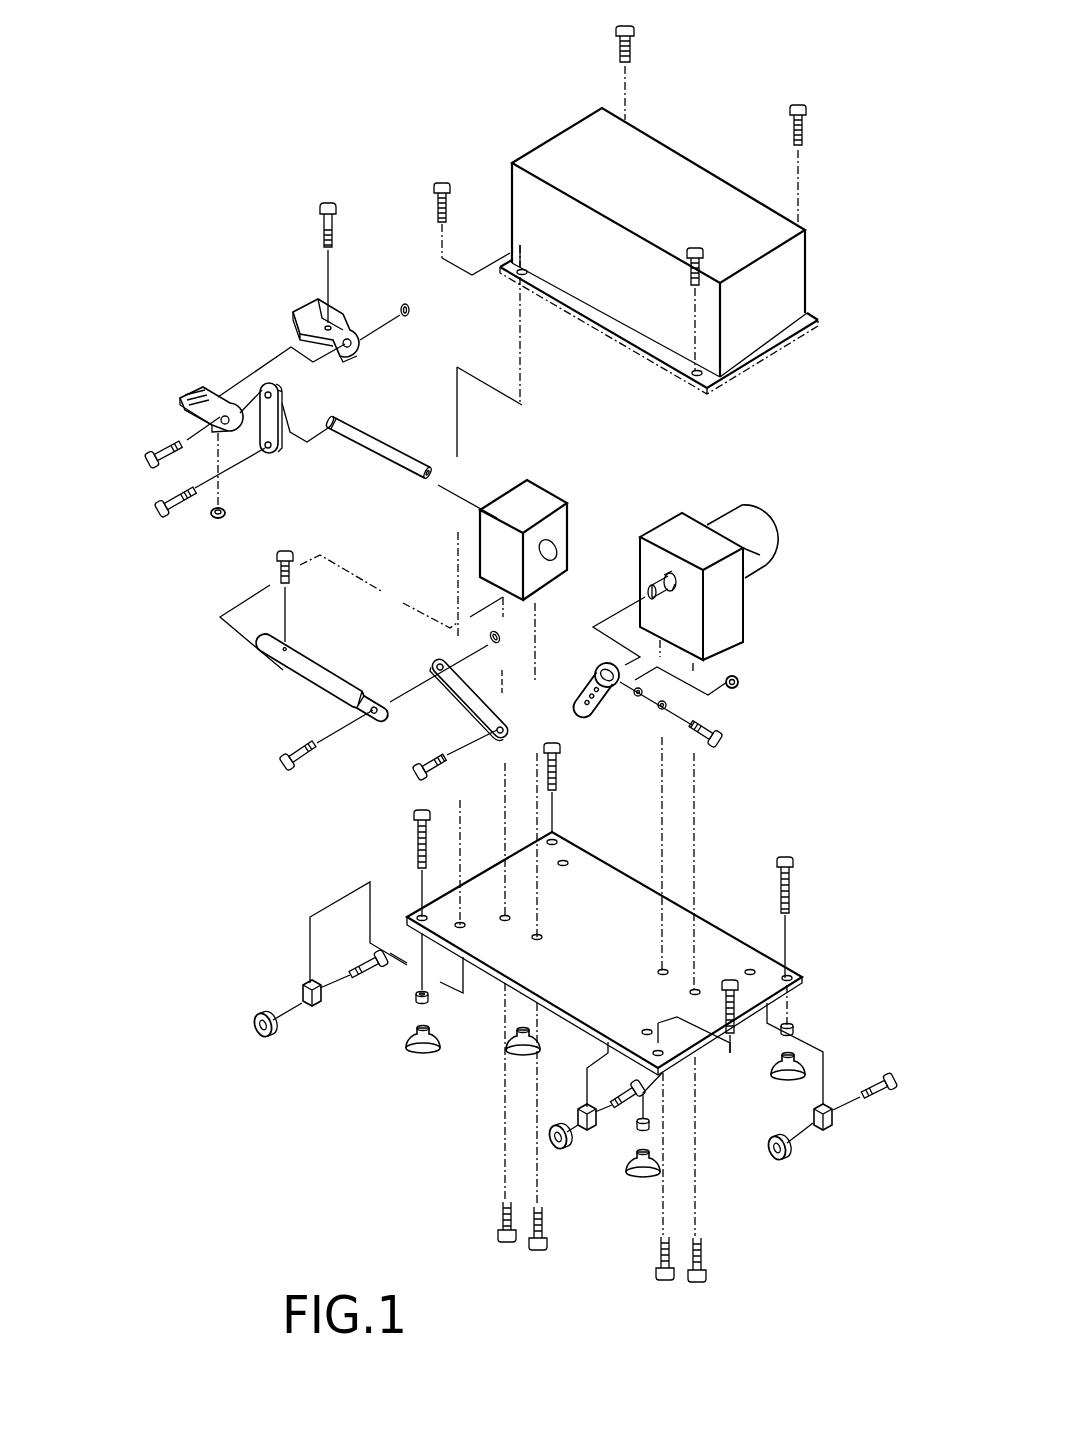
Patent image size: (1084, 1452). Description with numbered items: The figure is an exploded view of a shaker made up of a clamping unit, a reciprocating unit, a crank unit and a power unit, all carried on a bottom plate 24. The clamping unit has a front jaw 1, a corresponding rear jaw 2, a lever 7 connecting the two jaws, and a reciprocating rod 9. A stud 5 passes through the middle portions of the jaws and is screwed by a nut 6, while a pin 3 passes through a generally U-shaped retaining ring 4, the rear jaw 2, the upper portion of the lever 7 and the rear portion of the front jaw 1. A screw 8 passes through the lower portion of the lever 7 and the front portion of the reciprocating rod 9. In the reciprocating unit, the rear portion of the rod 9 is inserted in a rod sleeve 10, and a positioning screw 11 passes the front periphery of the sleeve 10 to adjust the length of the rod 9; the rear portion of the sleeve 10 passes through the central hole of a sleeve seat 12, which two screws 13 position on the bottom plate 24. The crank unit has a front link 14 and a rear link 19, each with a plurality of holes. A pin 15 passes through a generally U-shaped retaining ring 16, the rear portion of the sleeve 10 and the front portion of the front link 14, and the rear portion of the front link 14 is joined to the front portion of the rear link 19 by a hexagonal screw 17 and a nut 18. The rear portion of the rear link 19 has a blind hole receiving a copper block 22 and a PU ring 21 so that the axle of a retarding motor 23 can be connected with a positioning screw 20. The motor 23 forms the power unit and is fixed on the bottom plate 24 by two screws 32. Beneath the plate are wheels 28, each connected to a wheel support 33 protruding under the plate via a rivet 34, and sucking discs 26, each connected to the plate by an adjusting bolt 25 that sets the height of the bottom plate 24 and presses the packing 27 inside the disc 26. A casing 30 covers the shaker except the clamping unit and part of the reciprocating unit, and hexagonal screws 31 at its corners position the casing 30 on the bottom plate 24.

The front jaw 1 is at (302, 315).
The rear jaw 2 is at (180, 397).
The pin 3 is at (148, 458).
The retaining ring 4 is at (402, 303).
The stud 5 is at (322, 205).
The nut 6 is at (213, 518).
The lever 7 is at (280, 450).
The screw 8 is at (158, 505).
The reciprocating rod 9 is at (365, 430).
The rod sleeve 10 is at (285, 670).
The positioning screw 11 is at (292, 572).
The sleeve seat 12 is at (540, 493).
The screws 13 is at (497, 1235).
The front link 14 is at (430, 663).
The pin 15 is at (305, 765).
The retaining ring 16 is at (500, 647).
The hexagonal screw 17 is at (417, 763).
The nut 18 is at (740, 682).
The rear link 19 is at (592, 718).
The positioning screw 20 is at (713, 740).
The PU ring 21 is at (637, 700).
The copper block 22 is at (667, 707).
The retarding motor 23 is at (773, 538).
The bottom plate 24 is at (702, 940).
The adjusting bolt 25 is at (795, 872).
The sucking disc 26 is at (413, 1057).
The packing 27 is at (417, 1003).
The wheel 28 is at (253, 1022).
The casing 30 is at (803, 277).
The hexagonal screws 31 is at (622, 42).
The screws 32 is at (657, 1280).
The wheel support 33 is at (830, 1125).
The rivet 34 is at (878, 1100).